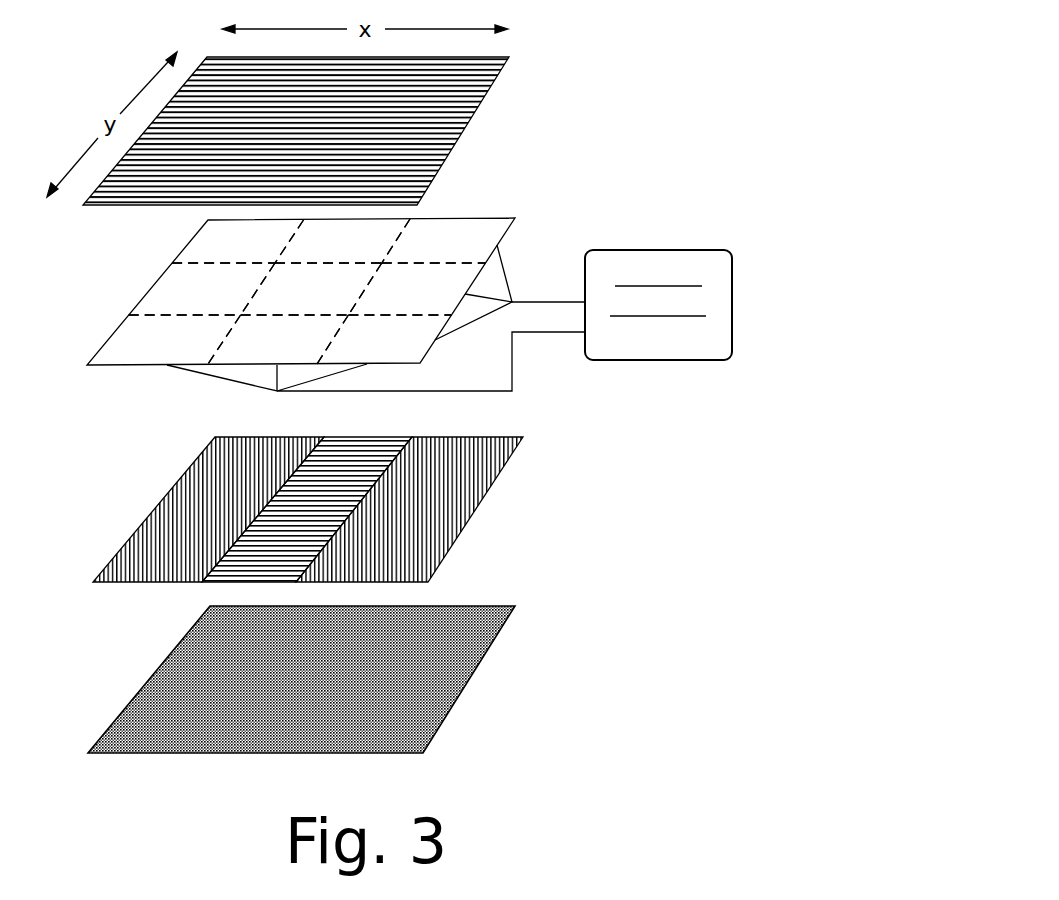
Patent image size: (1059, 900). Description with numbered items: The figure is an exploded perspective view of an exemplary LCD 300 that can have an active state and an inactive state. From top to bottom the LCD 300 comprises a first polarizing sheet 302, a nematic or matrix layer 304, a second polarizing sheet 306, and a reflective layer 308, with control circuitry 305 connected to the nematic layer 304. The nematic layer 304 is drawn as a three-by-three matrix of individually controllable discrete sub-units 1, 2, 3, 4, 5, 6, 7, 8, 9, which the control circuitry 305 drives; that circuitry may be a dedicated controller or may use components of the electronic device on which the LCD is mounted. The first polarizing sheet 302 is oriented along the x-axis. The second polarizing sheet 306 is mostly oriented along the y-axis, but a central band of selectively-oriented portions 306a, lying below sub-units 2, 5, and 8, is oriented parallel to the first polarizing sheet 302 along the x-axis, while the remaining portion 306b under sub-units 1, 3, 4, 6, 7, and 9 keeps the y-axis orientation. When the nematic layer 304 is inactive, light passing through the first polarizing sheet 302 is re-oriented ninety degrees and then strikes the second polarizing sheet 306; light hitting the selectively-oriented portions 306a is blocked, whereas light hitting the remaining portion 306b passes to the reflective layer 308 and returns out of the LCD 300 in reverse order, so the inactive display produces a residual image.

The LCD 300 is at (407, 388).
The first polarizing sheet 302 is at (366, 185).
The nematic layer 304 is at (351, 286).
The control circuitry 305 is at (637, 349).
The second polarizing sheet 306 is at (357, 491).
The selectively-oriented portions 306a is at (304, 564).
The remaining portion 306b is at (138, 564).
The reflective layer 308 is at (363, 661).
The sub-unit 1 is at (150, 354).
The sub-unit 2 is at (275, 354).
The sub-unit 3 is at (380, 352).
The sub-unit 4 is at (185, 305).
The sub-unit 5 is at (297, 305).
The sub-unit 6 is at (394, 302).
The sub-unit 7 is at (227, 254).
The sub-unit 8 is at (332, 254).
The sub-unit 9 is at (439, 254).